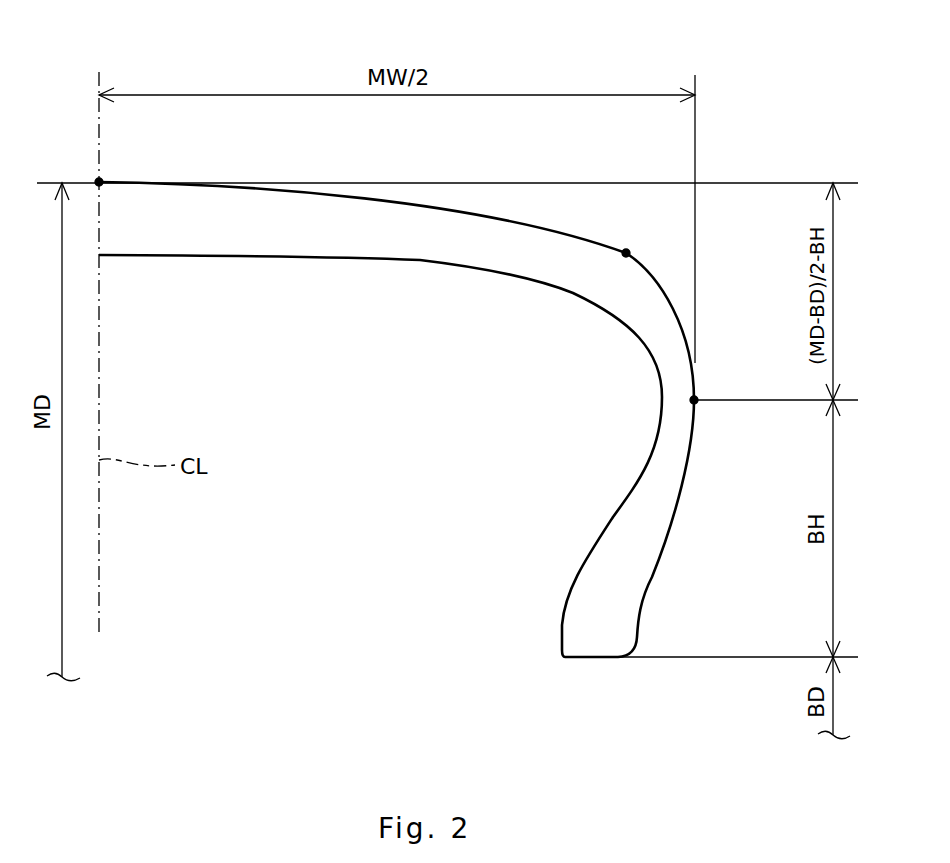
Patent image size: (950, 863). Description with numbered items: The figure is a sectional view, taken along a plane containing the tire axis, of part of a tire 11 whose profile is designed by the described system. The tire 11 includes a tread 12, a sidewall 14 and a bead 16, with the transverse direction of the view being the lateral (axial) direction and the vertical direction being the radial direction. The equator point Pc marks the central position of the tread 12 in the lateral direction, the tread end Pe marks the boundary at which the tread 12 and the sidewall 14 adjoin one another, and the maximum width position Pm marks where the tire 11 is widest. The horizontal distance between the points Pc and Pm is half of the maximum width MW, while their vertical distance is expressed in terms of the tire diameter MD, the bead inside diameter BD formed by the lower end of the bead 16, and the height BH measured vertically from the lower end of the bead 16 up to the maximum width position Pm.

The tire 11 is at (350, 232).
The tread 12 is at (180, 182).
The sidewall 14 is at (667, 290).
The bead 16 is at (578, 616).
The central position of the tread (equator point) Pc is at (99, 182).
The tread end Pe is at (626, 252).
The maximum width position Pm is at (694, 400).